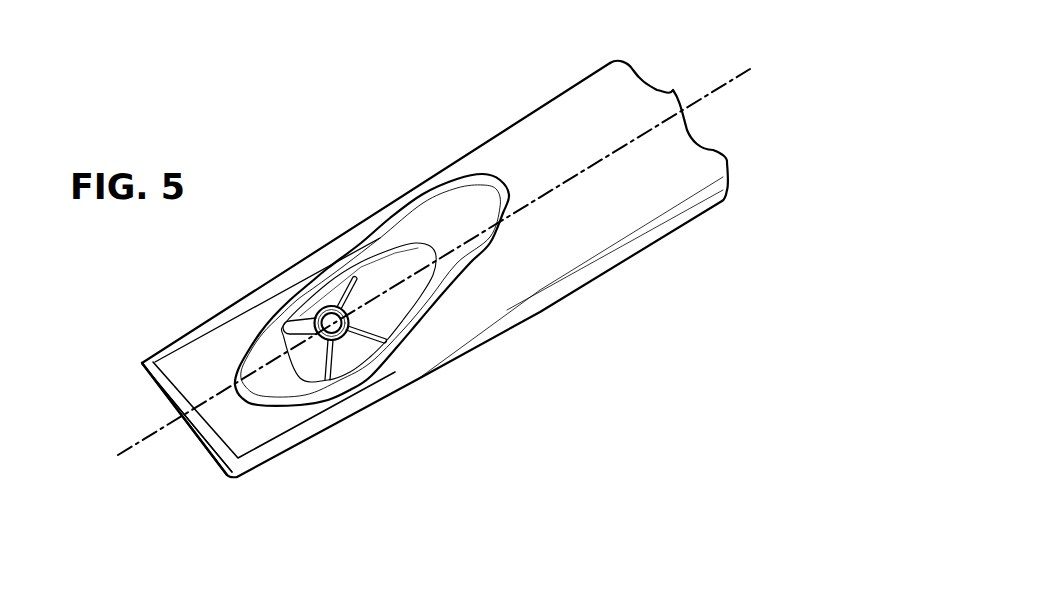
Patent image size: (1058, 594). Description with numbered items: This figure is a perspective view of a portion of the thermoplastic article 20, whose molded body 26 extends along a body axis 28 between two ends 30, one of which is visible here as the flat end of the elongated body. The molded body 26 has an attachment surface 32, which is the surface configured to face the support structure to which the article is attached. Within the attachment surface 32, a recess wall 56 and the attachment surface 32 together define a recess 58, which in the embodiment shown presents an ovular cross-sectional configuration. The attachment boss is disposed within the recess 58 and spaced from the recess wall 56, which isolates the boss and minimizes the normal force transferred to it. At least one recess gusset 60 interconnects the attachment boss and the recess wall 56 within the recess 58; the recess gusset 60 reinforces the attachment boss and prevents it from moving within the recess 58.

The thermoplastic article 20 is at (717, 219).
The molded body 26 is at (583, 100).
The body axis 28 is at (725, 92).
The ends 30 is at (238, 492).
The attachment surface 32 is at (400, 222).
The recess wall 56 is at (268, 334).
The recess 58 is at (238, 360).
The recess gusset 60 is at (341, 285).